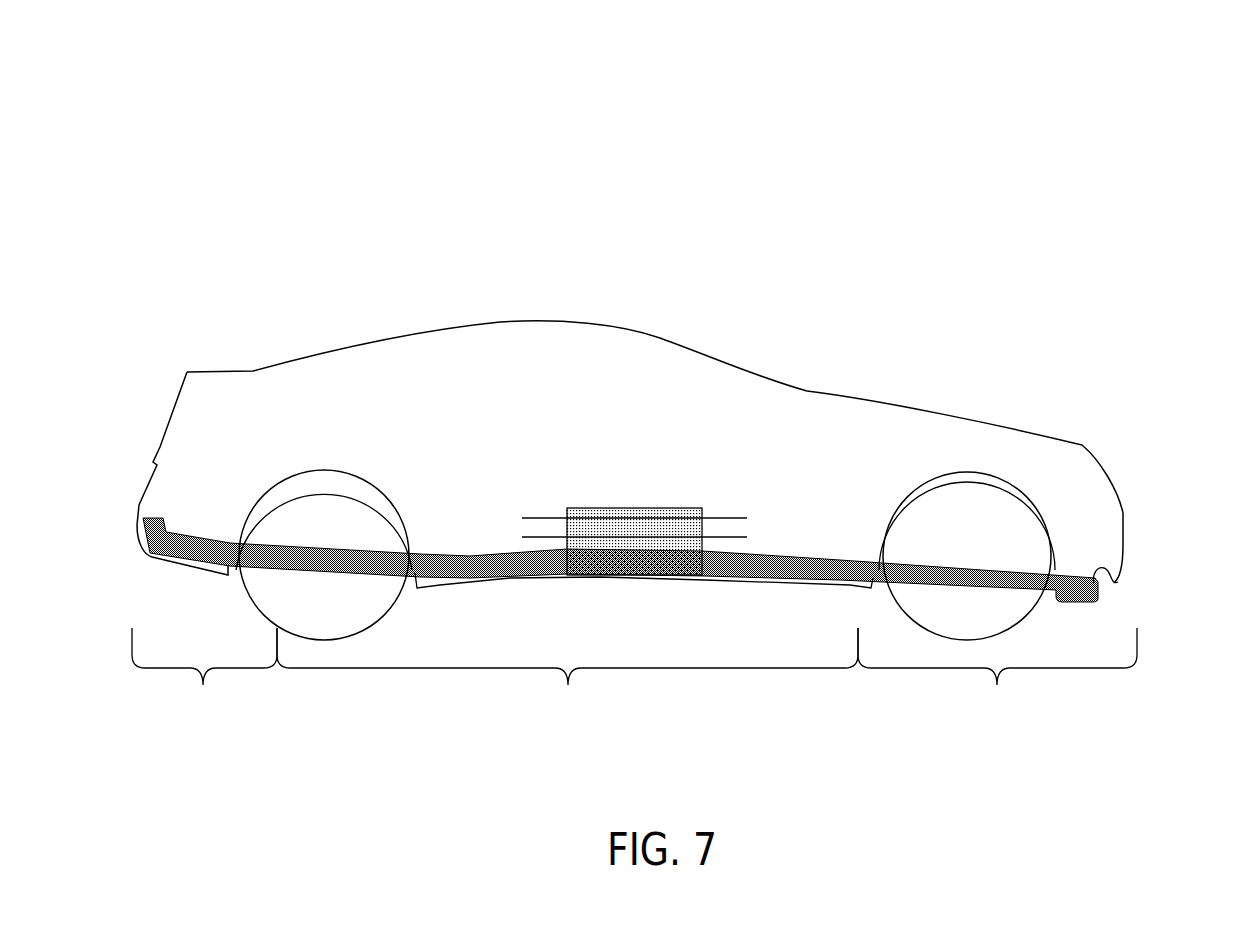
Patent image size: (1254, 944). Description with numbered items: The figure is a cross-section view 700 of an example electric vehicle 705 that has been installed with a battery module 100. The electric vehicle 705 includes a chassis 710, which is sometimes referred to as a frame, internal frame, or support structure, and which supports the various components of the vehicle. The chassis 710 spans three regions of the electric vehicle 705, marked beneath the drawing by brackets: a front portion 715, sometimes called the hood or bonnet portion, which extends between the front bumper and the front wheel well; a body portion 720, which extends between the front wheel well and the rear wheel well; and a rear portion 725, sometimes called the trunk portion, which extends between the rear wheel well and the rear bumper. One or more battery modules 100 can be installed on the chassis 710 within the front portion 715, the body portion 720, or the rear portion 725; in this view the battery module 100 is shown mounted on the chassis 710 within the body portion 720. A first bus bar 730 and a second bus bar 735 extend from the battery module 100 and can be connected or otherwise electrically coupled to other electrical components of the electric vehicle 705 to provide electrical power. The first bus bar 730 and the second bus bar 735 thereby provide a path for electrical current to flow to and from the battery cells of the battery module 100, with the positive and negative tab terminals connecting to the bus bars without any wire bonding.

The cross-section view 700 is at (672, 120).
The electric vehicle 705 is at (623, 326).
The battery module 100 is at (621, 503).
The first bus bar 730 is at (734, 515).
The second bus bar 735 is at (749, 533).
The chassis 710 is at (1080, 588).
The rear portion 725 is at (204, 675).
The body portion 720 is at (567, 675).
The front portion 715 is at (997, 675).